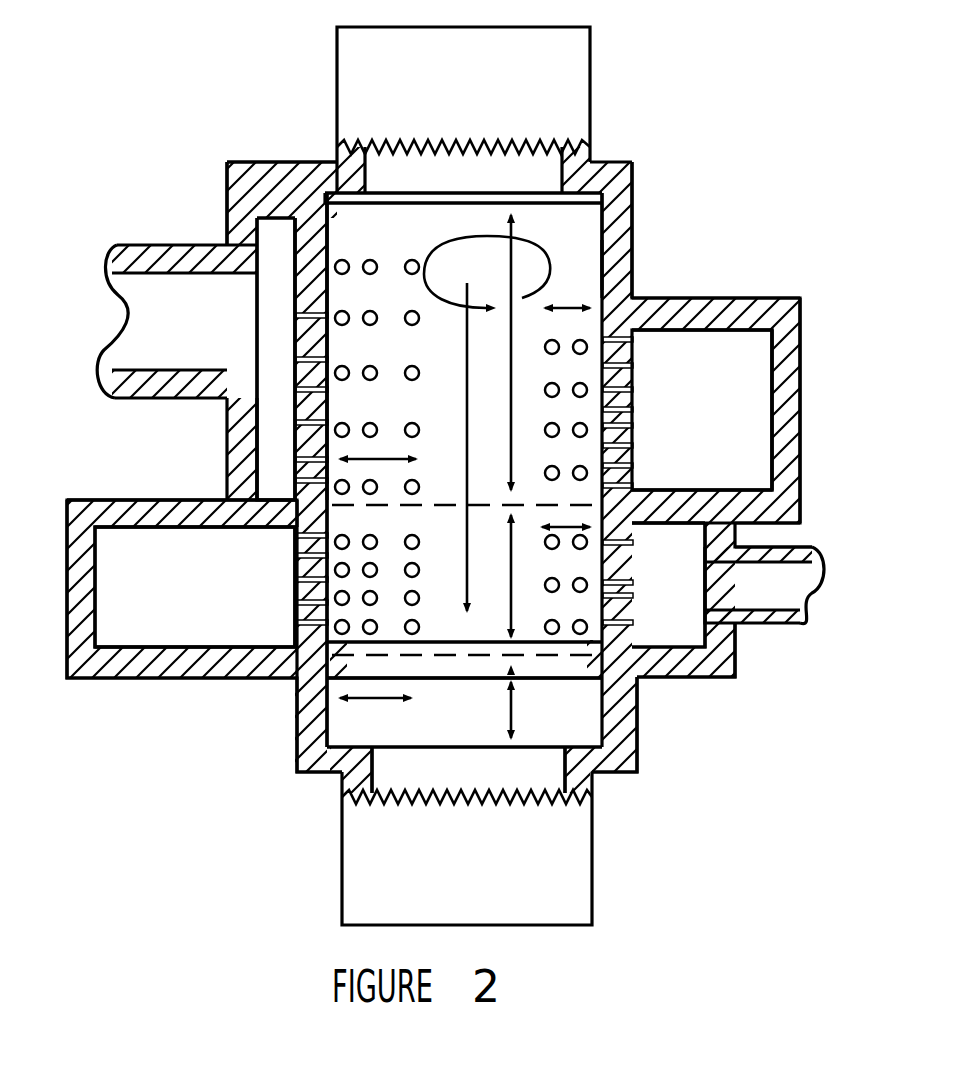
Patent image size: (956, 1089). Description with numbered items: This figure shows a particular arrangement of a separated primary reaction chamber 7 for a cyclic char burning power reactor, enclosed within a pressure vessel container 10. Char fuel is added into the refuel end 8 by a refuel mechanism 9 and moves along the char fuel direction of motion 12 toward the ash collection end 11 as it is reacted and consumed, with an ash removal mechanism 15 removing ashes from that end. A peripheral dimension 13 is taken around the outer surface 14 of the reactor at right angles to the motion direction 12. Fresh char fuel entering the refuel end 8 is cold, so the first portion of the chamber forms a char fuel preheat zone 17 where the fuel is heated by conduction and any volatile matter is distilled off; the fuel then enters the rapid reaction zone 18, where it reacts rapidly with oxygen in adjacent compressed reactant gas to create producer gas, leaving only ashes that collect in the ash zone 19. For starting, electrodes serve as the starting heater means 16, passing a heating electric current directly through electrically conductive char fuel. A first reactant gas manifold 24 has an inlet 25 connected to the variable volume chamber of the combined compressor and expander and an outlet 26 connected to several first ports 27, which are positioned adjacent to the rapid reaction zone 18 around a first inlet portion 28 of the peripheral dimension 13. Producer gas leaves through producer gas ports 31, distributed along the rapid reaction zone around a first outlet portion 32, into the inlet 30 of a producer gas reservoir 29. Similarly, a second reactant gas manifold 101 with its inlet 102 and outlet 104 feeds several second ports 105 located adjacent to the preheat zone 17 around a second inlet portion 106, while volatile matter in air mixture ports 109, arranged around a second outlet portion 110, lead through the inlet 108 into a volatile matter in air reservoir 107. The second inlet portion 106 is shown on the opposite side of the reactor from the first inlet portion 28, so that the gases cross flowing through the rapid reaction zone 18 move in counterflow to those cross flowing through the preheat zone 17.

The primary reaction chamber 7 is at (603, 248).
The refuel end 8 is at (428, 227).
The refuel mechanism 9 is at (513, 100).
The pressure vessel container 10 is at (332, 318).
The ash collection end 11 is at (460, 717).
The char fuel direction of motion 12 is at (507, 557).
The peripheral dimension 13 is at (518, 230).
The outer surface 14 is at (607, 236).
The ash removal mechanism 15 is at (538, 862).
The starting heater means 16 is at (410, 262).
The char fuel preheat zone 17 is at (522, 298).
The rapid reaction zone 18 is at (277, 585).
The ash zone 19 is at (507, 705).
The first reactant gas manifold 24 is at (668, 622).
The inlet 25 is at (760, 587).
The outlet 26 is at (645, 590).
The first ports 27 is at (560, 693).
The first inlet portion 28 is at (568, 530).
The producer gas reservoir 29 is at (293, 528).
The inlet 30 is at (167, 627).
The producer gas ports 31 is at (293, 567).
The first outlet portion 32 is at (345, 790).
The second reactant gas manifold 101 is at (270, 418).
The inlet 102 is at (208, 302).
The outlet 104 is at (277, 273).
The second ports 105 is at (243, 157).
The second inlet portion 106 is at (362, 488).
The volatile matter in air reservoir 107 is at (750, 468).
The inlet 108 is at (642, 395).
The volatile matter in air mixture ports 109 is at (580, 390).
The second outlet portion 110 is at (553, 343).